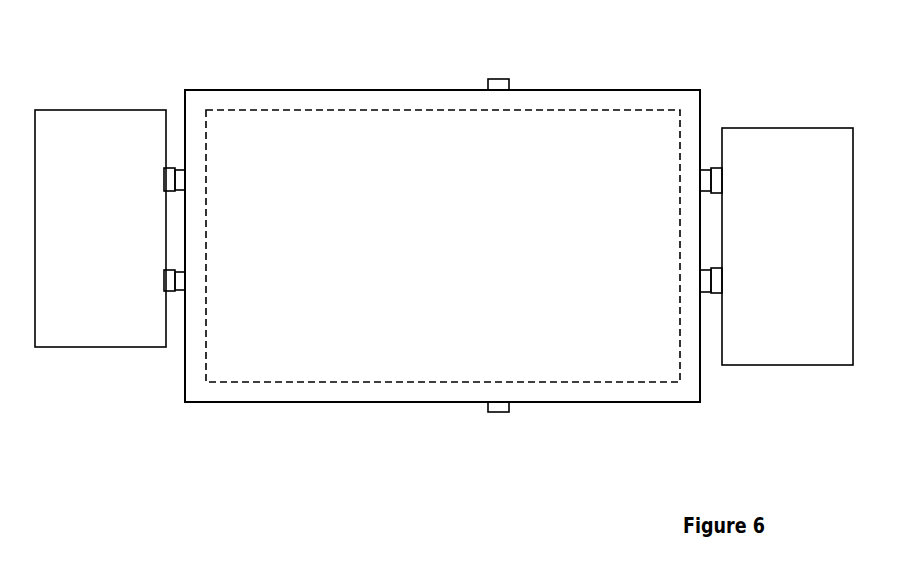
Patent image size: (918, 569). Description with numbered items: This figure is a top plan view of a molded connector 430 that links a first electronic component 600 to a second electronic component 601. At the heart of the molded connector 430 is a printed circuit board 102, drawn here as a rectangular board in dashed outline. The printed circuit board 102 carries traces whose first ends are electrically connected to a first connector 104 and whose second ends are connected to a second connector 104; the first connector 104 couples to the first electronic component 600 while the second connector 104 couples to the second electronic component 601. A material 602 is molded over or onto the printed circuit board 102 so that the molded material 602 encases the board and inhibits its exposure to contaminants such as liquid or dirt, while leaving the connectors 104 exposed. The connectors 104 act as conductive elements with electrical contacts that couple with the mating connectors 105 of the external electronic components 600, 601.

The printed circuit board 102 is at (403, 234).
The connector 104 is at (183, 178).
The mating connector 105 is at (166, 278).
The molded connector 430 is at (722, 423).
The first electronic component 600 is at (125, 256).
The second electronic component 601 is at (812, 274).
The molded material 602 is at (265, 90).